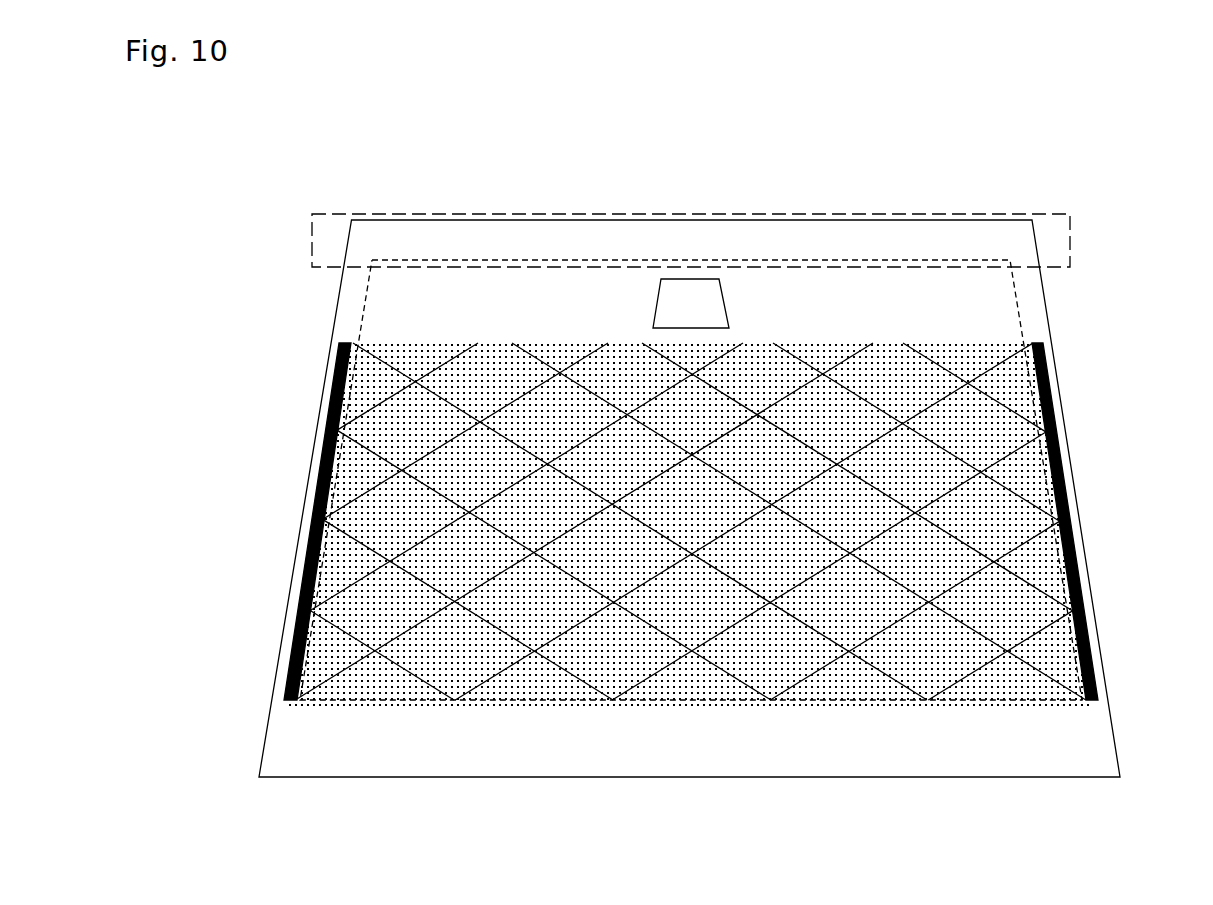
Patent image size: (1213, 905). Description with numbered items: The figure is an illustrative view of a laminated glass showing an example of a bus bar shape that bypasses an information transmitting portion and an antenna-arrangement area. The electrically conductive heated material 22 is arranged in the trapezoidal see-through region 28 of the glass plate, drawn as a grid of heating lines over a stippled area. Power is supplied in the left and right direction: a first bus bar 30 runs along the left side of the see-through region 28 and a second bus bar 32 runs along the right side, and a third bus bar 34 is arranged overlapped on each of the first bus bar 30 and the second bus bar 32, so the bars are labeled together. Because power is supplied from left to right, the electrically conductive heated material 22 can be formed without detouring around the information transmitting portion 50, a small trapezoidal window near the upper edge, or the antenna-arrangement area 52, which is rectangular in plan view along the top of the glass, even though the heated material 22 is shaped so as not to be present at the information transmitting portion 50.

The electrically conductive heated material 22 is at (523, 393).
The see-through region 28 is at (678, 516).
The first bus bar 30 is at (317, 503).
The second bus bar 32 is at (1068, 503).
The third bus bar 34 is at (692, 521).
The information transmitting portion 50 is at (688, 297).
The antenna-arrangement area 52 is at (1027, 214).